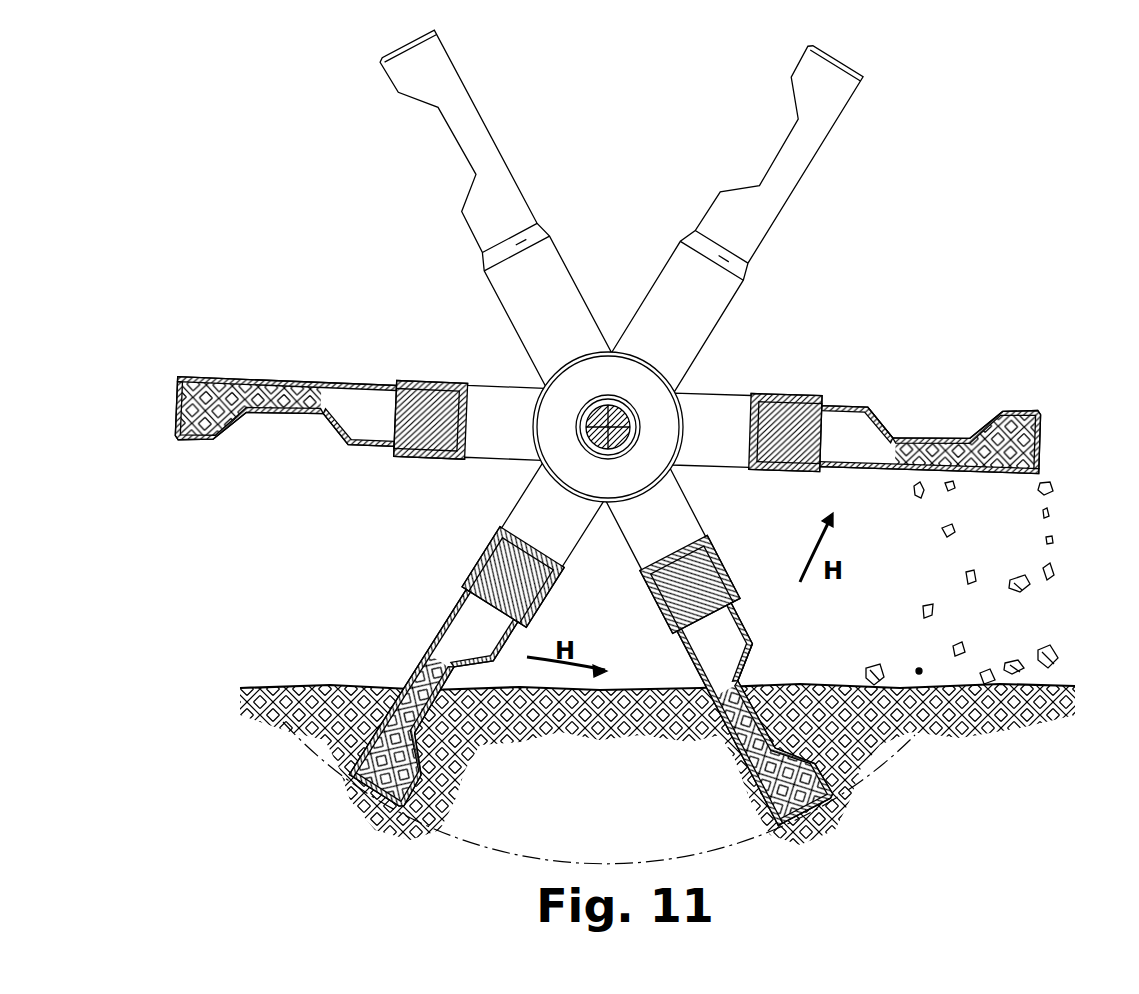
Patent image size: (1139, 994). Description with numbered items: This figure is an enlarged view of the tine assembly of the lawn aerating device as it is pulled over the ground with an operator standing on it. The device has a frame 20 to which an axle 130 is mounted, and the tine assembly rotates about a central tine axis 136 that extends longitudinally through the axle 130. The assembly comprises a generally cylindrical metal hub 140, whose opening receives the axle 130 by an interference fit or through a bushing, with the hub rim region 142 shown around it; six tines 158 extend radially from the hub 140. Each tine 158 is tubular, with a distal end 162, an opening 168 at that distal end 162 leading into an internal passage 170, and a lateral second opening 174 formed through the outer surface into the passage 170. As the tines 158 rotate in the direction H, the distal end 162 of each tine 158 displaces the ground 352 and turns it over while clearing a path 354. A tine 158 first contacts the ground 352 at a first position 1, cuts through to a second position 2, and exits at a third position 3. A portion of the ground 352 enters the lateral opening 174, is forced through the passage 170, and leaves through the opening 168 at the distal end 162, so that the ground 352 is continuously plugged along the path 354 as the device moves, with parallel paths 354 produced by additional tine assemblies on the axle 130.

The frame 20 is at (757, 342).
The axle 130 is at (622, 405).
The central tine axis 136 is at (585, 405).
The hub 140 is at (568, 477).
The hub rim 142 is at (597, 483).
The tine 158 is at (845, 400).
The distal end 162 is at (611, 580).
The opening 168 is at (1043, 430).
The passage 170 is at (945, 448).
The second opening 174 is at (905, 436).
The ground 352 is at (1040, 655).
The path 354 is at (485, 822).
The first position 1 is at (395, 770).
The second position 2 is at (828, 818).
The third position 3 is at (1040, 455).